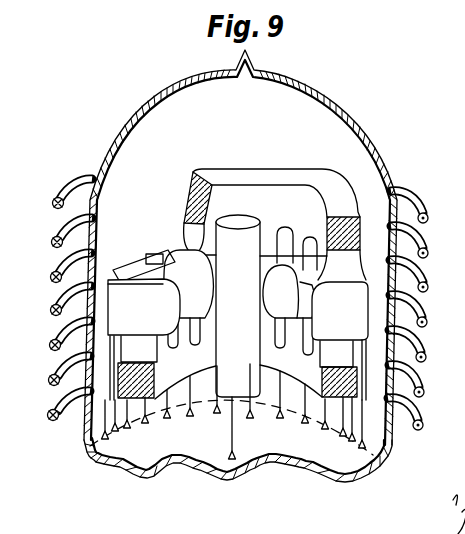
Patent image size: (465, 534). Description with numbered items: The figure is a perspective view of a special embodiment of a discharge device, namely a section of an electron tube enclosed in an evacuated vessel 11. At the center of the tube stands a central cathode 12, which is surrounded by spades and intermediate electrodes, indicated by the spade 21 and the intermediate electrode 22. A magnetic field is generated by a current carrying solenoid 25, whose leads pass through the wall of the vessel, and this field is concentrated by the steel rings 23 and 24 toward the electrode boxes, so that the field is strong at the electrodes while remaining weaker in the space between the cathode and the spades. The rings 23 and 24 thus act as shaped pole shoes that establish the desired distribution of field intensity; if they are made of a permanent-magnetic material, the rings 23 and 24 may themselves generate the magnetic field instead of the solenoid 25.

The evacuated vessel 11 is at (343, 100).
The central cathode 12 is at (247, 220).
The spade 21 is at (126, 266).
The intermediate electrode 22 is at (148, 255).
The steel ring 23 is at (314, 177).
The steel ring 24 is at (231, 405).
The current carrying solenoid 25 is at (53, 199).